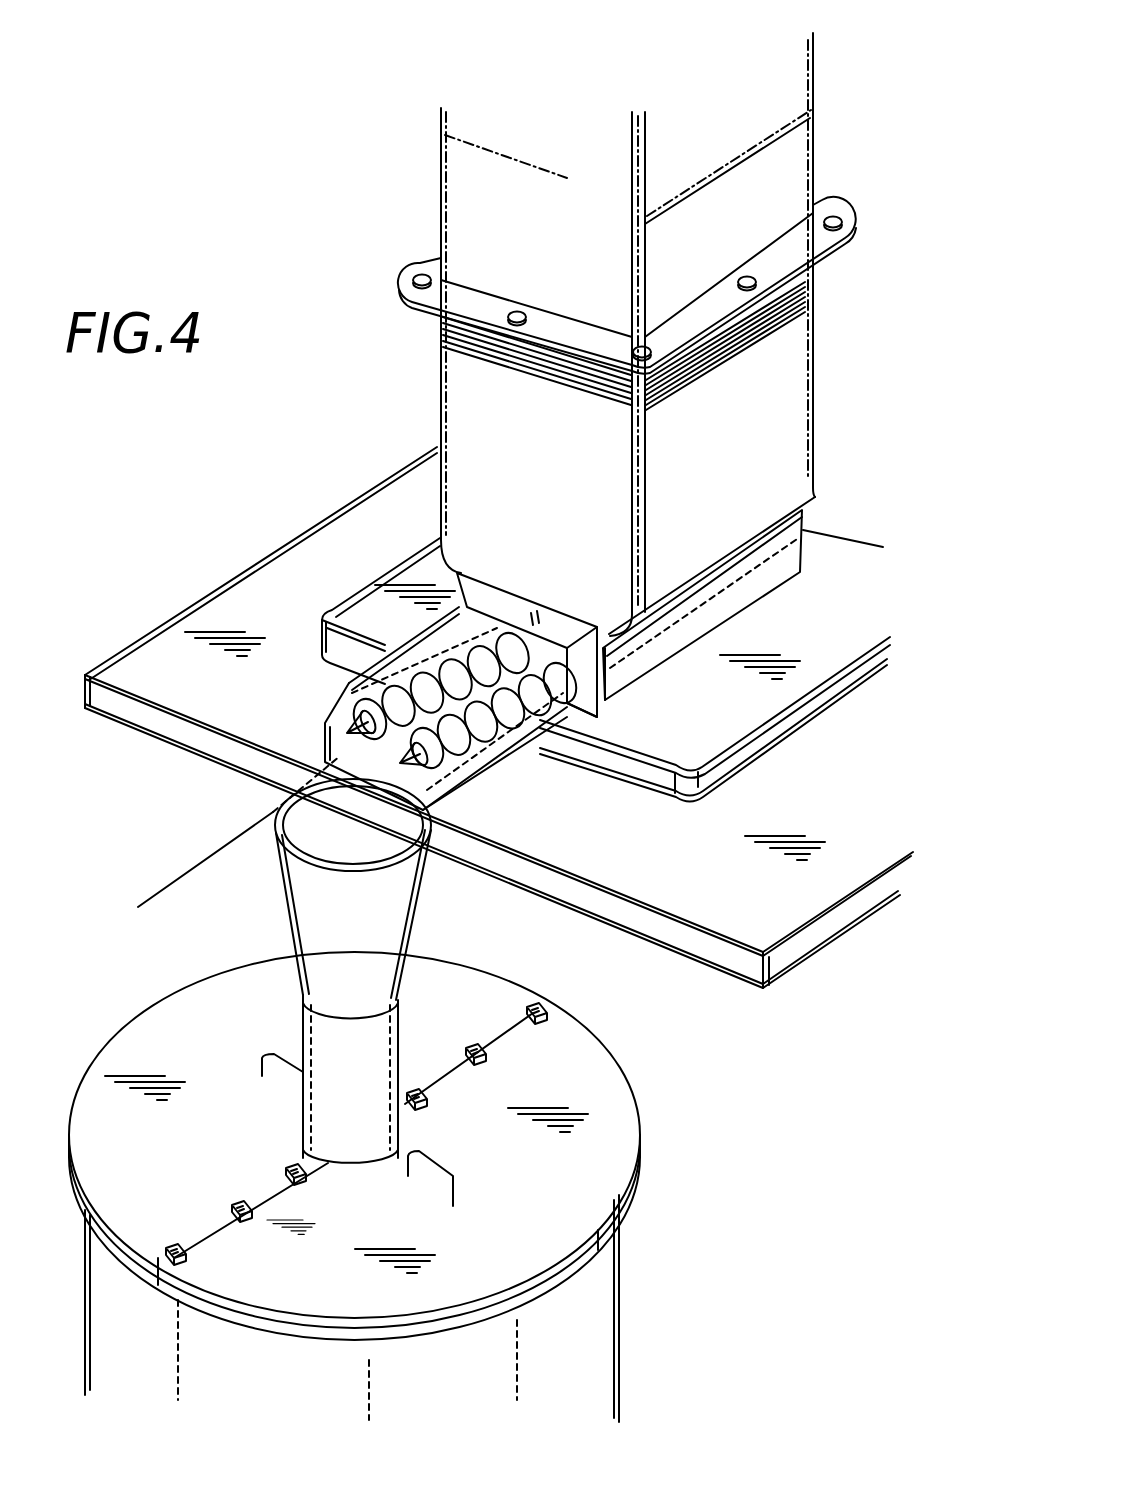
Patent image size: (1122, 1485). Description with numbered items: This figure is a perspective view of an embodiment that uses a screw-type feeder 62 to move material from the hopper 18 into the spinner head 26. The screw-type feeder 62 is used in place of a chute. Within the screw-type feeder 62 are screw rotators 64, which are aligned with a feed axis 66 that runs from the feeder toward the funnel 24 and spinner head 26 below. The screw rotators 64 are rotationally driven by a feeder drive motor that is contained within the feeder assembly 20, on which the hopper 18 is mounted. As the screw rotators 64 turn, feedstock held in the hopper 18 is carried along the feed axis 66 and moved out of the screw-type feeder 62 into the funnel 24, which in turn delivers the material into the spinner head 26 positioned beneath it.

The hopper 18 is at (550, 248).
The feeder assembly 20 is at (780, 548).
The funnel 24 is at (367, 946).
The spinner head 26 is at (590, 1313).
The screw-type feeder 62 is at (509, 759).
The screw rotators 64 is at (347, 728).
The feed axis 66 is at (182, 877).